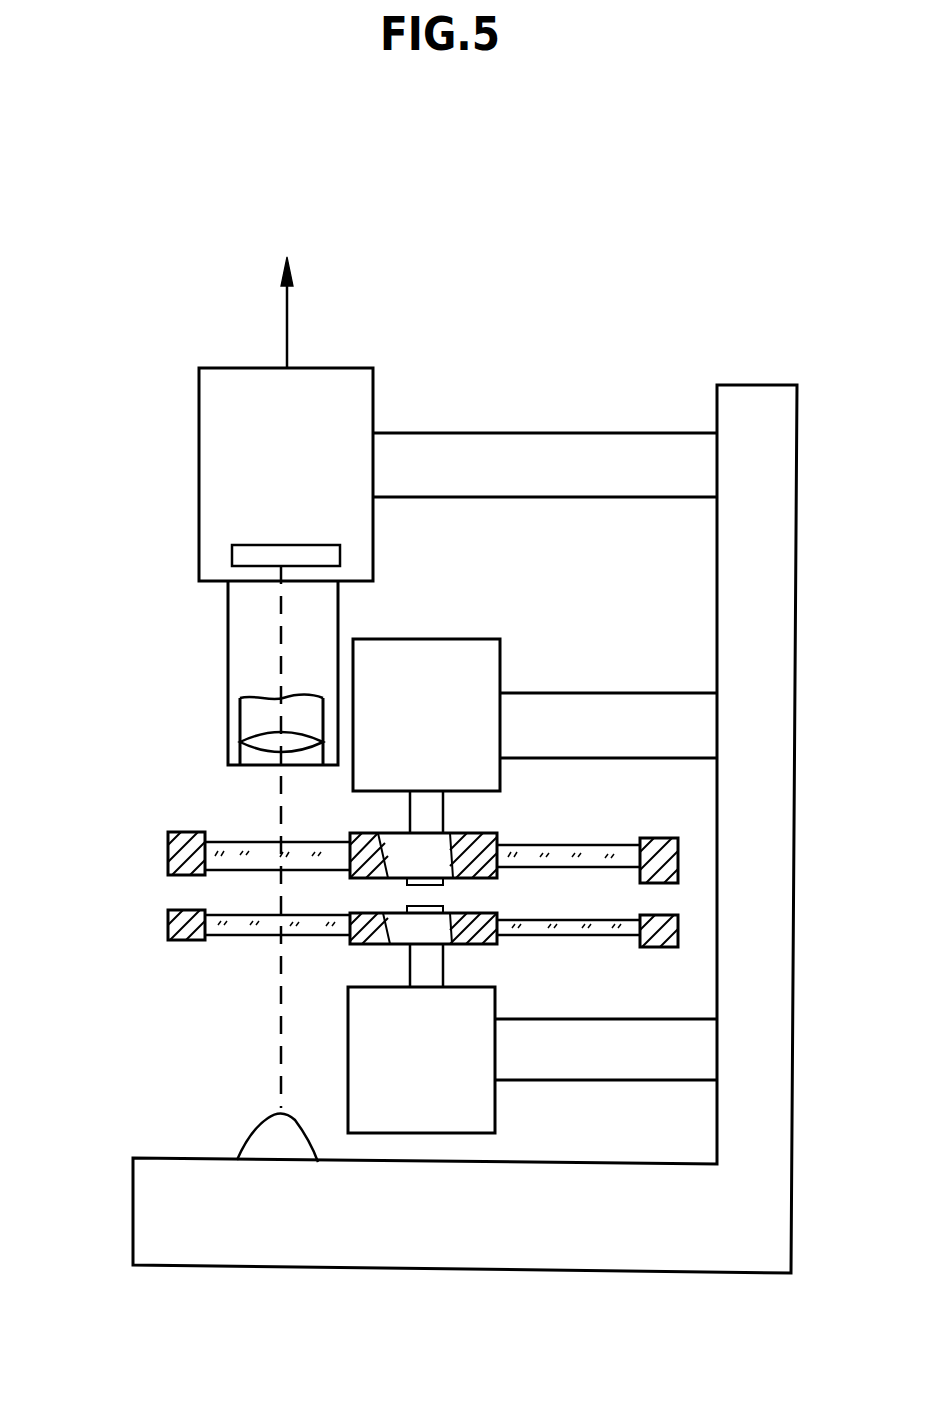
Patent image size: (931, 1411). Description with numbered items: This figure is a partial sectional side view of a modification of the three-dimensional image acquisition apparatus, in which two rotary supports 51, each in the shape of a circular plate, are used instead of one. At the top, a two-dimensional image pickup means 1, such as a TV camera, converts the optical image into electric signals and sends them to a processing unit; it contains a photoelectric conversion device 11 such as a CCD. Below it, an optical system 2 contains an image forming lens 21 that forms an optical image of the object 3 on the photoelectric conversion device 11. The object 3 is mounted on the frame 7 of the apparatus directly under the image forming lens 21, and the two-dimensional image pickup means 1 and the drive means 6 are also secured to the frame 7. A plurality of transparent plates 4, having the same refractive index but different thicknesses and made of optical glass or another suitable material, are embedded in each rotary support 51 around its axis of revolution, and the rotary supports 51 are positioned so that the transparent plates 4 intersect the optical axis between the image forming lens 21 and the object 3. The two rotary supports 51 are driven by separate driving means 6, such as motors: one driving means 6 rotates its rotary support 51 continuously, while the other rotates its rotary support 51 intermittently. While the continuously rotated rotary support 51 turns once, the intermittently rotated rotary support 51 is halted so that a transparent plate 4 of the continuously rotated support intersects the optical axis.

The two-dimensional image pickup means 1 is at (183, 488).
The photoelectric conversion device 11 is at (320, 557).
The optical system 2 is at (212, 650).
The image forming lens 21 is at (262, 740).
The object 3 is at (262, 1147).
The transparent plates 4 is at (230, 852).
The rotary support 51 is at (490, 838).
The driving means 6 is at (480, 672).
The frame 7 is at (583, 1245).